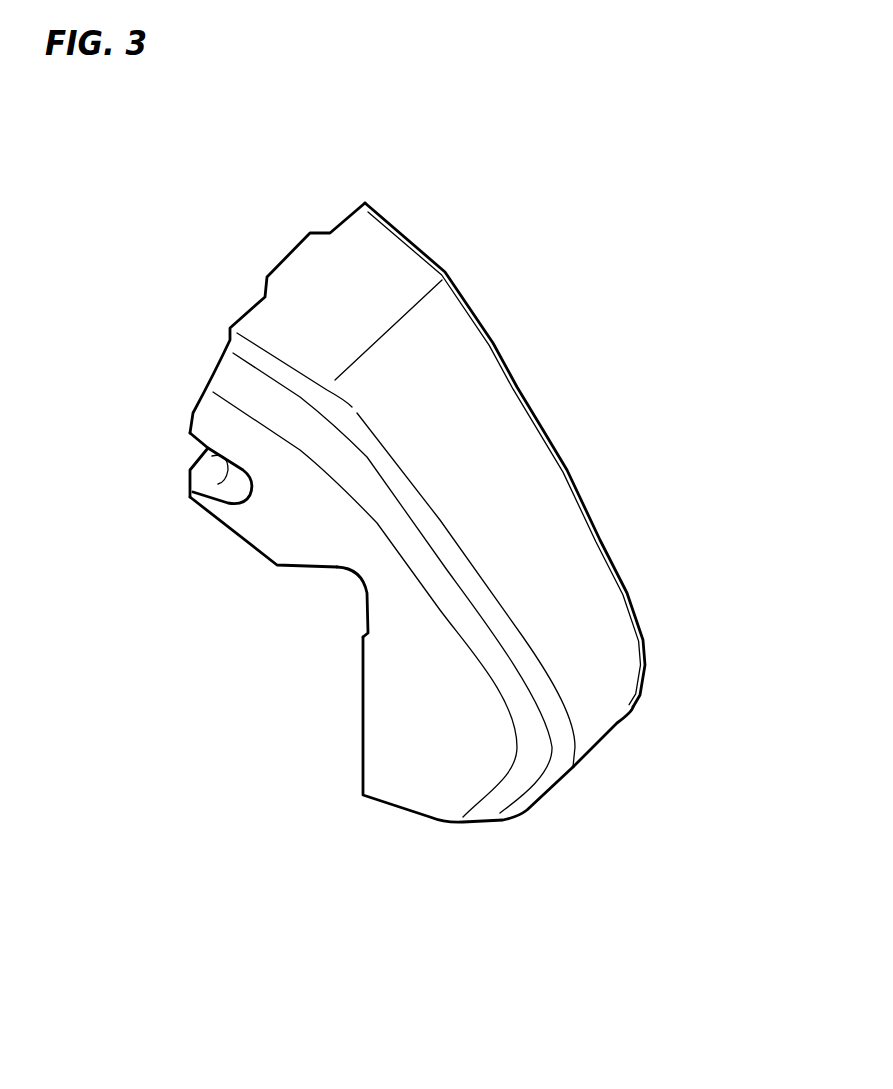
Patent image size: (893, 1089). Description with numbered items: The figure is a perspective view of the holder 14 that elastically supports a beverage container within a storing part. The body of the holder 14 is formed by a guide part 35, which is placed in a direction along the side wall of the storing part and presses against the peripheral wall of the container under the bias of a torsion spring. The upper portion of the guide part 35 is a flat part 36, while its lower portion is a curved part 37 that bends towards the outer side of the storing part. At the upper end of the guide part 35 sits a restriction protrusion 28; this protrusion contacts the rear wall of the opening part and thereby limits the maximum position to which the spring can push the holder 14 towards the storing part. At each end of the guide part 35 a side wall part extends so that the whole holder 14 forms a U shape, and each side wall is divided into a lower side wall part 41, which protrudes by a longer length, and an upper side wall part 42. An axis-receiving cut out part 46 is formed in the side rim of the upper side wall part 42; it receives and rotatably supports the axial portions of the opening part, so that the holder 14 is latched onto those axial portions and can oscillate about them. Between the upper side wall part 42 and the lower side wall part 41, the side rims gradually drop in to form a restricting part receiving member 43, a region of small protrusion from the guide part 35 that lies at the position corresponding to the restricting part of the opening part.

The holder 14 is at (466, 204).
The restriction protrusion 28 is at (278, 262).
The guide part 35 is at (538, 491).
The flat part 36 is at (503, 423).
The curved part 37 is at (600, 720).
The lower side wall part 41 is at (410, 770).
The upper side wall part 42 is at (268, 533).
The restricting part receiving member 43 is at (355, 582).
The axis-receiving cut out part 46 is at (217, 477).